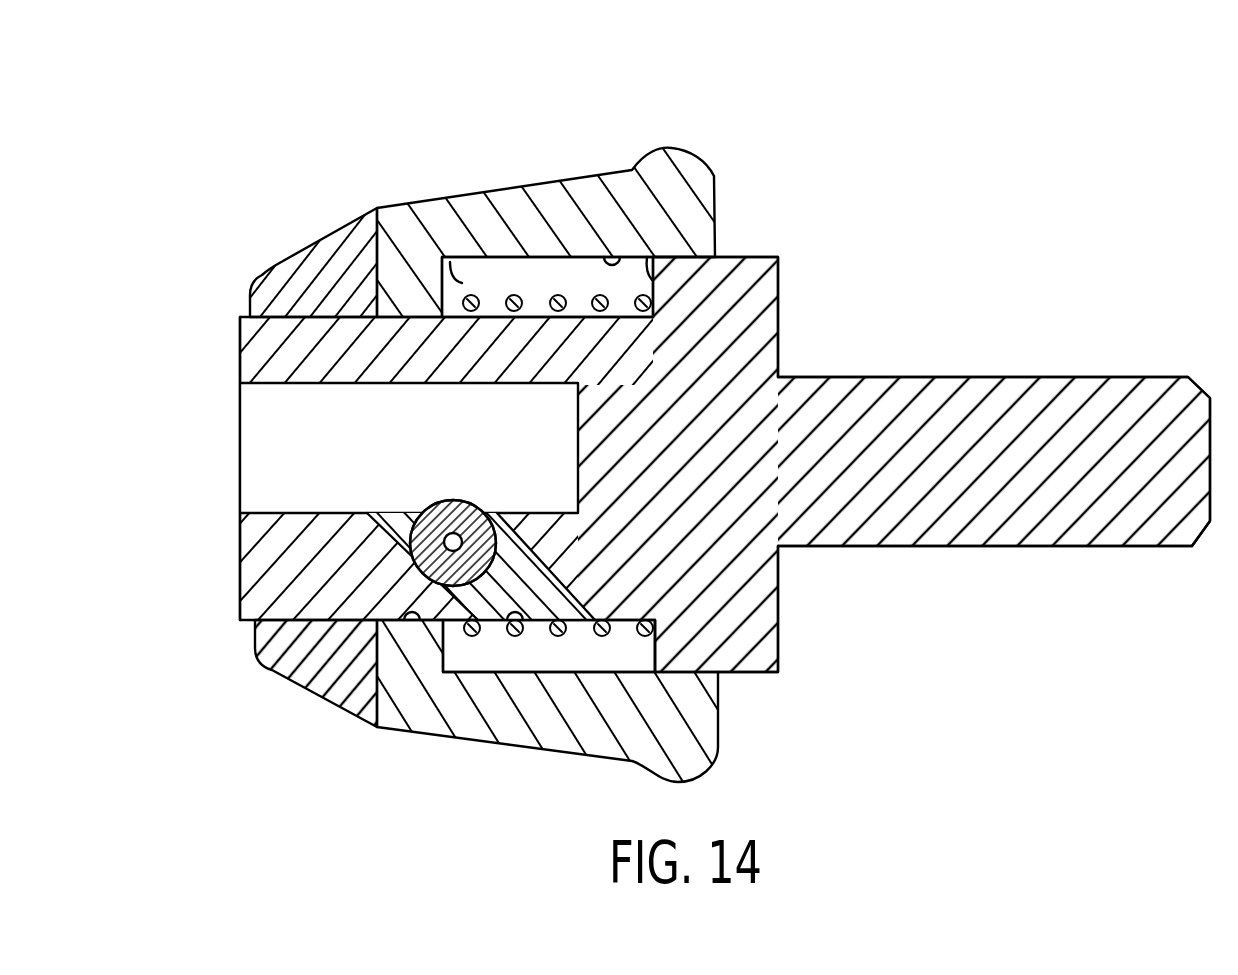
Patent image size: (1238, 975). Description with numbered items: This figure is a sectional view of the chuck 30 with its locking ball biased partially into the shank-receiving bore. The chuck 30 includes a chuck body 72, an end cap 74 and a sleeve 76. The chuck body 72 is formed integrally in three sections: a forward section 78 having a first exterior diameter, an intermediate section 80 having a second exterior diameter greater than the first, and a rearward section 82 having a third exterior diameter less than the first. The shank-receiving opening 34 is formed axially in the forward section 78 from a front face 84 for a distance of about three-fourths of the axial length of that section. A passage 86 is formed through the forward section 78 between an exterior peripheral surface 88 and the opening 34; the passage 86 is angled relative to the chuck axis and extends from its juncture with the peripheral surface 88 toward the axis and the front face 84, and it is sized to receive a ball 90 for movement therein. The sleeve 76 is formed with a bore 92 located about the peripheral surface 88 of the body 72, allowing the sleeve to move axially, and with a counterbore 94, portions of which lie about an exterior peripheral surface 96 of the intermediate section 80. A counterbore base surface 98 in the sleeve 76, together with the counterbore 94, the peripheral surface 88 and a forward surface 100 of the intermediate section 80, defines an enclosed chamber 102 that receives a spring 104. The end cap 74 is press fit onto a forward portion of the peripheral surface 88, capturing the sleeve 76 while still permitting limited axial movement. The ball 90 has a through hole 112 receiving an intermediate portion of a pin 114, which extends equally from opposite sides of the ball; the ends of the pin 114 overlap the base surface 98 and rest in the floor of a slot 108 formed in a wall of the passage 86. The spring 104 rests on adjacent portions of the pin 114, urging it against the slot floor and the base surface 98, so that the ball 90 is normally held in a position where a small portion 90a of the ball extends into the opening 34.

The chuck 30 is at (888, 155).
The shank-receiving opening 34 is at (282, 513).
The chuck body 72 is at (840, 375).
The end cap 74 is at (278, 260).
The sleeve 76 is at (405, 200).
The forward section 78 is at (257, 603).
The intermediate section 80 is at (757, 262).
The rearward section 82 is at (1090, 385).
The front face 84 is at (238, 357).
The passage 86 is at (420, 557).
The exterior peripheral surface 88 is at (625, 620).
The ball 90 is at (303, 662).
The small portion of the ball 90a is at (452, 500).
The bore 92 is at (405, 622).
The counterbore 94 is at (612, 252).
The exterior peripheral surface 96 is at (745, 672).
The counterbore base surface 98 is at (450, 262).
The forward surface 100 is at (647, 257).
The enclosed chamber 102 is at (557, 285).
The spring 104 is at (514, 295).
The slot 108 is at (542, 635).
The through hole 112 is at (463, 530).
The pin 114 is at (488, 622).